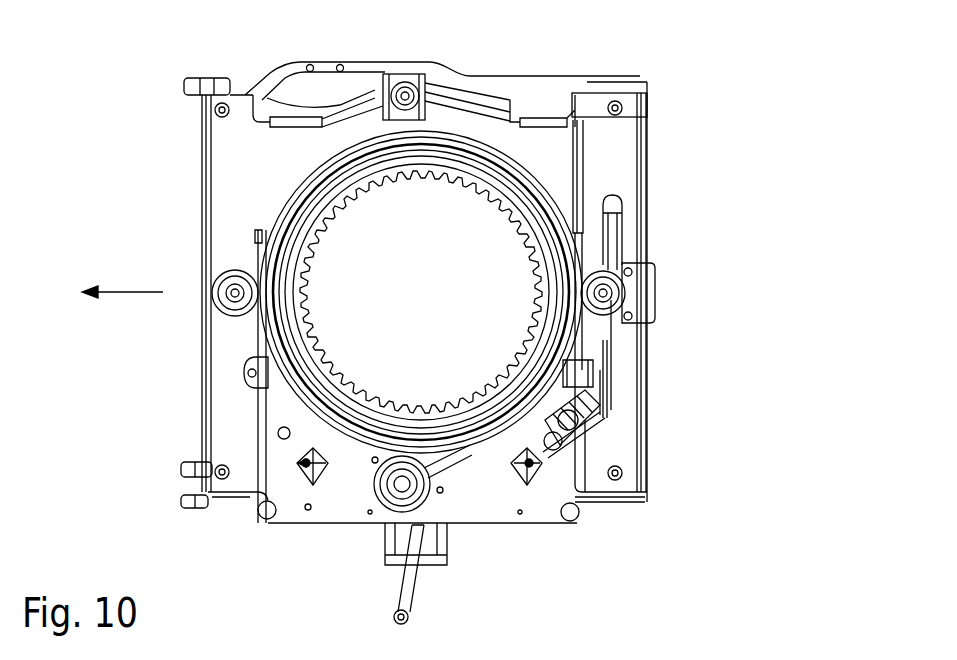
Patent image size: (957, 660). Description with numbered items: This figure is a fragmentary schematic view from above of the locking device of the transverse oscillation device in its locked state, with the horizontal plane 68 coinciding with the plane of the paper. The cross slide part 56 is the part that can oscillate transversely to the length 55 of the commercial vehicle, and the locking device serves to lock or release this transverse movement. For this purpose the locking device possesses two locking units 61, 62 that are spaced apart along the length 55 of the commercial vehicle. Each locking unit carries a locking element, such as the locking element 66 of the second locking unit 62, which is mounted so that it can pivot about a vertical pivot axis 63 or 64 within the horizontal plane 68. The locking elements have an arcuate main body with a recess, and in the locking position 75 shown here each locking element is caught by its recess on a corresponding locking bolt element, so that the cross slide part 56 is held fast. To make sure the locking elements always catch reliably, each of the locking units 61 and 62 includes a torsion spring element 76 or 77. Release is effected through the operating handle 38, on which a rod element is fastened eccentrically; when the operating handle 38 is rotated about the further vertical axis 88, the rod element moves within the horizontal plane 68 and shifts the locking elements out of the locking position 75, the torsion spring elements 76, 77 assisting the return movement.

The cross slide part 56 is at (625, 128).
The horizontal plane 68 is at (768, 209).
The locking position 75 is at (728, 272).
The length of the commercial vehicle 55 is at (125, 293).
The locking element 66 is at (588, 404).
The locking unit 62 is at (662, 455).
The vertical pivot axis 64 is at (575, 517).
The vertical pivot axis 63 is at (267, 519).
The locking unit 61 is at (295, 552).
The torsion spring element 76 is at (314, 484).
The torsion spring element 77 is at (523, 488).
The further vertical axis 88 is at (420, 584).
The operating handle 38 is at (417, 610).